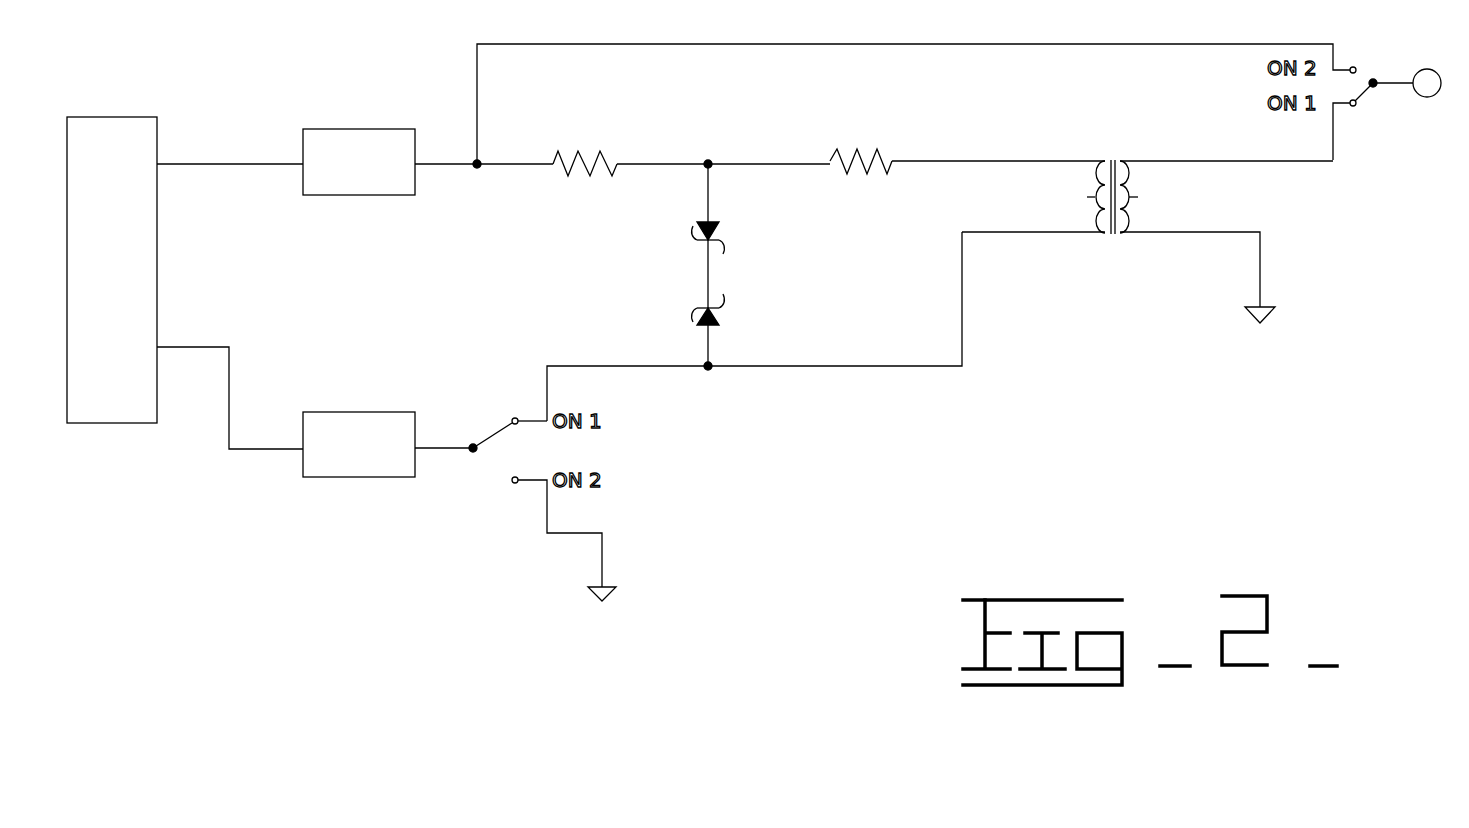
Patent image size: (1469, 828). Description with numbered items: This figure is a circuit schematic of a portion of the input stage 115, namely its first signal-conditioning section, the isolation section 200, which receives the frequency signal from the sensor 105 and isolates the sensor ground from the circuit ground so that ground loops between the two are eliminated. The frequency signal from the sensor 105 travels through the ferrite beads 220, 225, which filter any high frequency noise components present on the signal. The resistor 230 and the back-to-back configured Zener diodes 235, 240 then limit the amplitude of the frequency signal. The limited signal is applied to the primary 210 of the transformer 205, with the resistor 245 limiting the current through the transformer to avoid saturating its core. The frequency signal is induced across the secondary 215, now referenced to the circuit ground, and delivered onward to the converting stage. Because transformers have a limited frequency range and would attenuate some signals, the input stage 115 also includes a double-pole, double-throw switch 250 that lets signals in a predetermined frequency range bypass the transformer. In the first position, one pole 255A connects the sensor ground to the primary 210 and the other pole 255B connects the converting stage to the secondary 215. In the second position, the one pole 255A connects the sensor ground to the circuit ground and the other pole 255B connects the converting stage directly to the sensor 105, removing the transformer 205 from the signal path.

The sensor 105 is at (117, 117).
The input stage 115 is at (459, 651).
The isolation section 200 is at (1278, 409).
The transformer 205 is at (1110, 158).
The primary 210 is at (1097, 160).
The secondary 215 is at (1139, 160).
The ferrite bead 220 is at (315, 129).
The ferrite bead 225 is at (355, 477).
The resistor 230 is at (600, 152).
The Zener diode 235 is at (706, 238).
The Zener diode 240 is at (706, 309).
The resistor 245 is at (875, 159).
The double-pole, double-throw switch 250 is at (748, 463).
The pole 255A is at (511, 418).
The pole 255B is at (1364, 95).